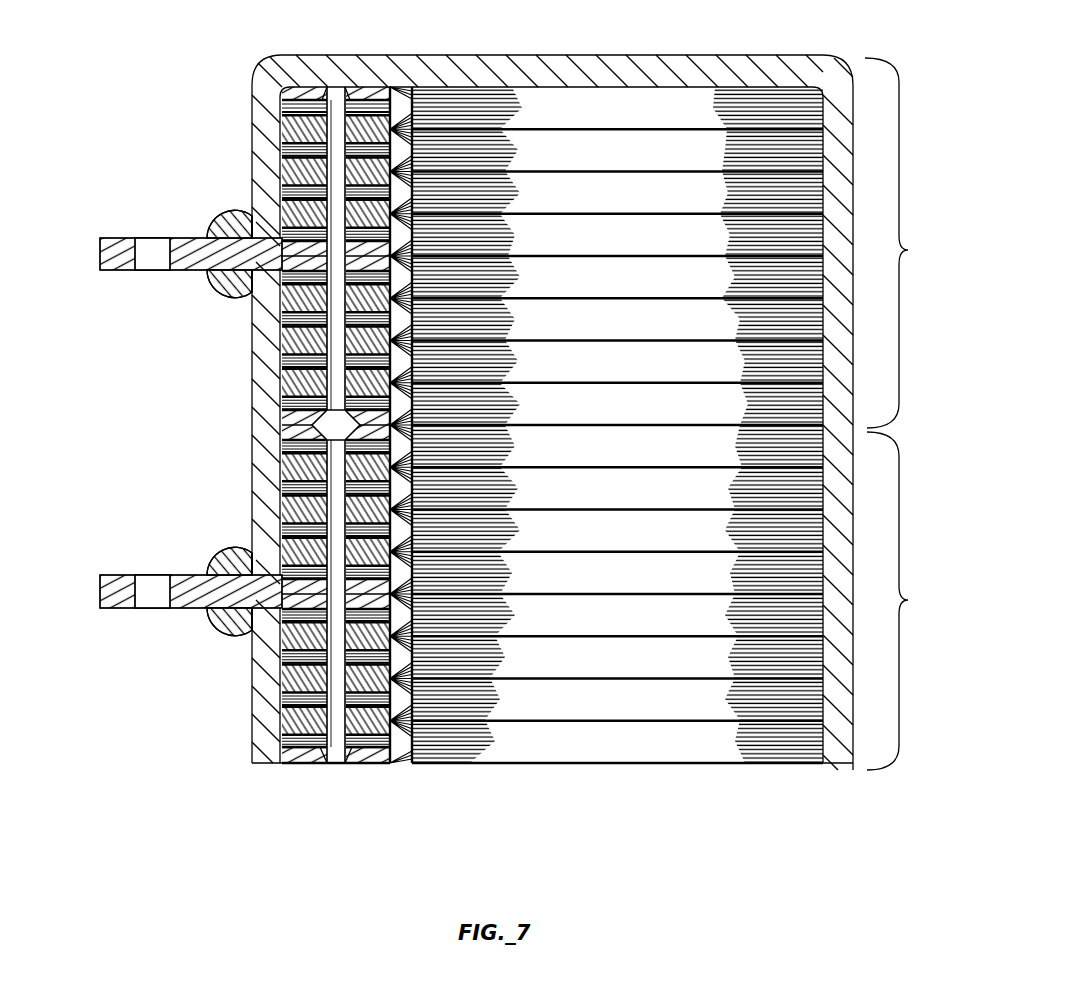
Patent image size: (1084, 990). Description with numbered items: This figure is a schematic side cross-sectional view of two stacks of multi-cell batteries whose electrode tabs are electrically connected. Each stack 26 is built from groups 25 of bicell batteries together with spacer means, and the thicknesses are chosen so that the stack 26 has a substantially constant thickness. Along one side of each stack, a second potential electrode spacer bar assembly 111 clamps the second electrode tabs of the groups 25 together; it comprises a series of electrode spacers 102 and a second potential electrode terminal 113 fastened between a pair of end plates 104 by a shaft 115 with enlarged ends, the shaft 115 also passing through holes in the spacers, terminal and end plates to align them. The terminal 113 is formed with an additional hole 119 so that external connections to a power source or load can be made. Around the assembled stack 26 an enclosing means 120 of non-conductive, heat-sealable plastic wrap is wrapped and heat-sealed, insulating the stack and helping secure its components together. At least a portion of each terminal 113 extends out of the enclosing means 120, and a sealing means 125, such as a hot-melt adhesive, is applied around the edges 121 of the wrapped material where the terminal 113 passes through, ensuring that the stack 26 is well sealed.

The group of bicell batteries 25 is at (488, 758).
The stack 26 is at (906, 414).
The electrode spacer 102 is at (300, 160).
The electrode spacer bar assembly end plate 104 is at (310, 95).
The second potential electrode spacer bar assembly 111 is at (135, 318).
The second potential electrode terminal 113 is at (125, 238).
The shaft 115 is at (337, 765).
The additional hole 119 is at (160, 238).
The enclosing means 120 is at (548, 62).
The edge of the wrapped material 121 is at (252, 208).
The sealing means 125 is at (210, 222).